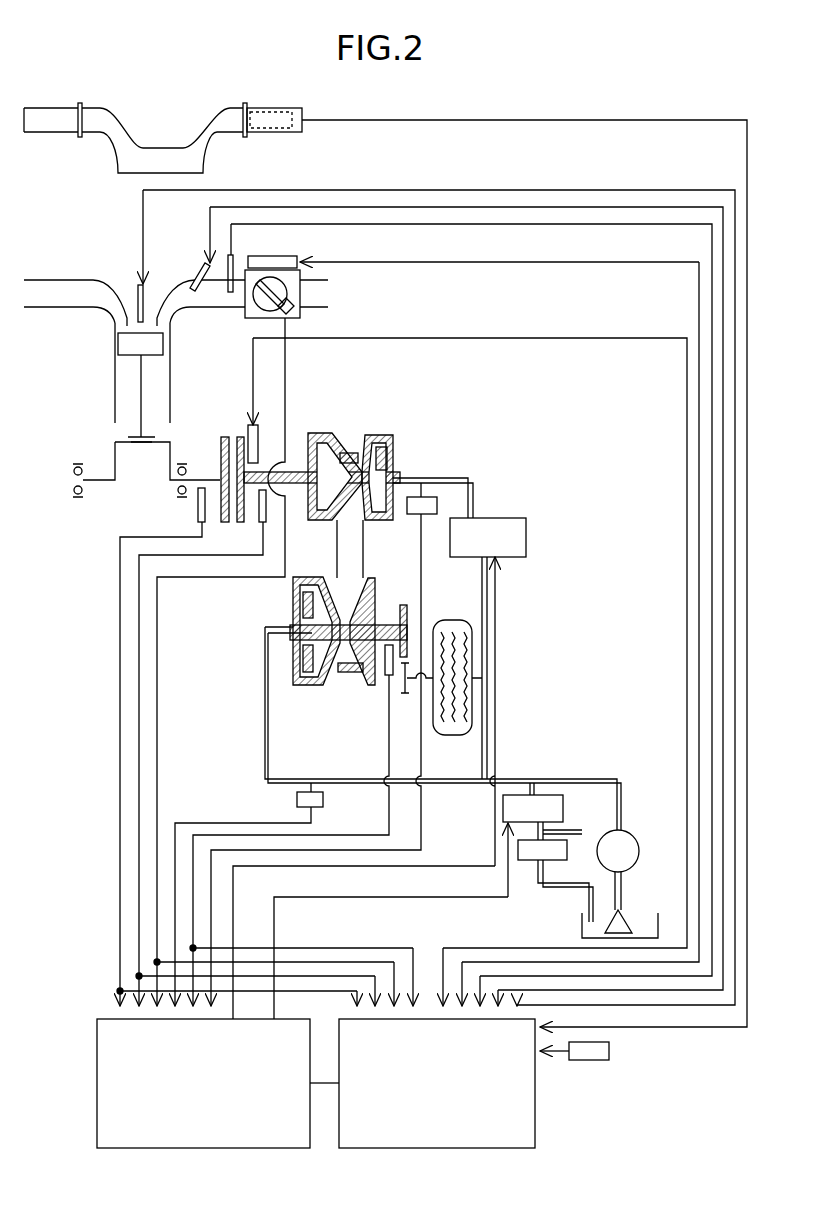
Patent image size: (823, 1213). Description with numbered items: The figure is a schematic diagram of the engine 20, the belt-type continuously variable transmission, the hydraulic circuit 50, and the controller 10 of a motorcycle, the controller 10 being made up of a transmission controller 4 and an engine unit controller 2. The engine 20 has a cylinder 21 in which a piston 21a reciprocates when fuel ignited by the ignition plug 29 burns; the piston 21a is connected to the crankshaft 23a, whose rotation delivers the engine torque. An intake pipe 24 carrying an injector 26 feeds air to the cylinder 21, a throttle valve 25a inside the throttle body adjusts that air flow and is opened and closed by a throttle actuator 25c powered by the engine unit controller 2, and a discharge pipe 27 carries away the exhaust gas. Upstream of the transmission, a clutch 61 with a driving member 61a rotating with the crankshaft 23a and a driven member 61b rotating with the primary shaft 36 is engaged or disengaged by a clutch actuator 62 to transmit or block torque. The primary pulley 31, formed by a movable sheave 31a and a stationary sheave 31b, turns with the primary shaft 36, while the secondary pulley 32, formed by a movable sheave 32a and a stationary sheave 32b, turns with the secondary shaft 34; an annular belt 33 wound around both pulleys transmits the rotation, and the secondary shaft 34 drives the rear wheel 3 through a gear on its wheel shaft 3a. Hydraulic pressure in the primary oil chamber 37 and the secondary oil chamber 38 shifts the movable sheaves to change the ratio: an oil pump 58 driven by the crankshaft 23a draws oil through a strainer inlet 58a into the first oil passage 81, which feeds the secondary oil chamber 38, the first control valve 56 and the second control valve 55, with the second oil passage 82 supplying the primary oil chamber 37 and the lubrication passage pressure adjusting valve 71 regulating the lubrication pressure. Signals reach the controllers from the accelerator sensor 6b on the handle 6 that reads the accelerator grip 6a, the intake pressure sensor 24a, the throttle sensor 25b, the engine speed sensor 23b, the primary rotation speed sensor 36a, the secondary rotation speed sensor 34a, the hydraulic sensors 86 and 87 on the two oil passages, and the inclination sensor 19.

The engine unit controller 2 is at (537, 1090).
The rear wheel 3 is at (478, 682).
The axle 3a is at (428, 684).
The transmission controller 4 is at (97, 1100).
The handle 6 is at (158, 146).
The accelerator grip 6a is at (292, 108).
The accelerator sensor 6b is at (266, 108).
The controller 10 is at (543, 1134).
The inclination sensor 19 is at (610, 1051).
The engine 20 is at (107, 218).
The cylinder 21 is at (114, 380).
The piston 21a is at (117, 342).
The crankshaft 23a is at (103, 478).
The engine speed sensor 23b is at (196, 505).
The intake pipe 24 is at (232, 312).
The intake pressure sensor 24a is at (237, 270).
The throttle valve 25a is at (294, 302).
The throttle sensor 25b is at (300, 314).
The throttle actuator 25c is at (290, 255).
The injector 26 is at (197, 272).
The discharge pipe 27 is at (48, 280).
The ignition plug 29 is at (150, 292).
The primary pulley 31 is at (372, 434).
The movable sheave 31a is at (375, 434).
The stationary sheave 31b is at (325, 434).
The secondary pulley 32 is at (337, 674).
The movable sheave 32a is at (313, 686).
The stationary sheave 32b is at (363, 657).
The belt 33 is at (367, 545).
The secondary shaft 34 is at (396, 620).
The secondary rotation speed sensor 34a is at (396, 676).
The primary shaft 36 is at (292, 470).
The primary rotation speed sensor 36a is at (259, 521).
The primary oil chamber 37 is at (392, 453).
The secondary oil chamber 38 is at (316, 607).
The hydraulic circuit 50 is at (473, 462).
The second control valve 55 is at (528, 538).
The first control valve 56 is at (550, 795).
The oil pump 58 is at (623, 830).
The inlet 58a is at (630, 925).
The clutch 61 is at (209, 435).
The driving member 61a is at (221, 452).
The clutch output plate 61b is at (230, 454).
The clutch actuator 62 is at (259, 446).
The lubrication passage pressure adjusting valve 71 is at (527, 861).
The first oil passage 81 is at (596, 779).
The second oil passage 82 is at (478, 492).
The hydraulic sensor 86 is at (296, 800).
The hydraulic sensor 87 is at (430, 497).